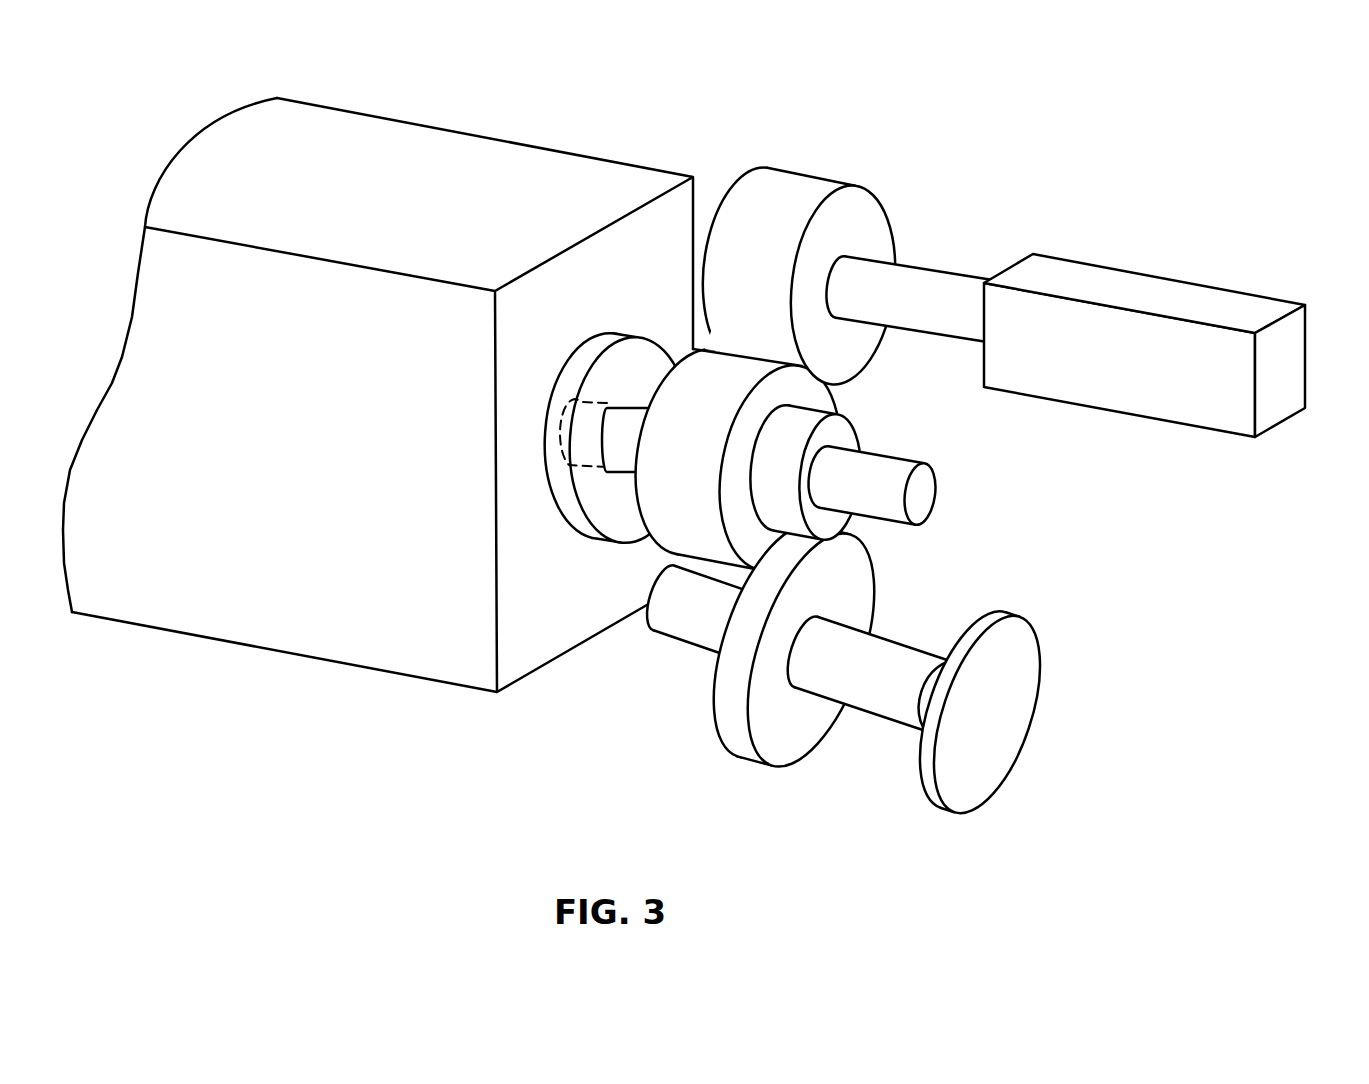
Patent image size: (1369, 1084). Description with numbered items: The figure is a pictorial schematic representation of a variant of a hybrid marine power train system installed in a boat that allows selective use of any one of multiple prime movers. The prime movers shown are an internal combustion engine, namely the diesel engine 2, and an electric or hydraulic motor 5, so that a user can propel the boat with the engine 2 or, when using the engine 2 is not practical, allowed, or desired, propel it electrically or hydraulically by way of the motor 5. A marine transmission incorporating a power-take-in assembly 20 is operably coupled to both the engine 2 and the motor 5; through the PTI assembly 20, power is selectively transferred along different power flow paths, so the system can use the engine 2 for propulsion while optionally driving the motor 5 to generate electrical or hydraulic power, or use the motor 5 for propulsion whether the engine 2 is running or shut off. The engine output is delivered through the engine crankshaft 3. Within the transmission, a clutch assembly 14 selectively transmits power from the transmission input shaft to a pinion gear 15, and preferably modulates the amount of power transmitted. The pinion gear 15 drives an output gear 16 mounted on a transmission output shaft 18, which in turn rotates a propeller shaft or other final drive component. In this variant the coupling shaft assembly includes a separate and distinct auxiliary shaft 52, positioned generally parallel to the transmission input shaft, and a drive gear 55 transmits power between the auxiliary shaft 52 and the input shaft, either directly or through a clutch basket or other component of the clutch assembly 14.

The diesel engine 2 is at (288, 484).
The engine crankshaft 3 is at (597, 417).
The power-take-in (PTI) assembly 20 is at (637, 335).
The clutch assembly 14 is at (702, 500).
The pinion gear 15 is at (845, 432).
The output gear 16 is at (735, 733).
The transmission output shaft 18 is at (903, 720).
The drive gear 55 is at (867, 225).
The auxiliary shaft 52 is at (953, 287).
The motor 5 is at (1278, 290).